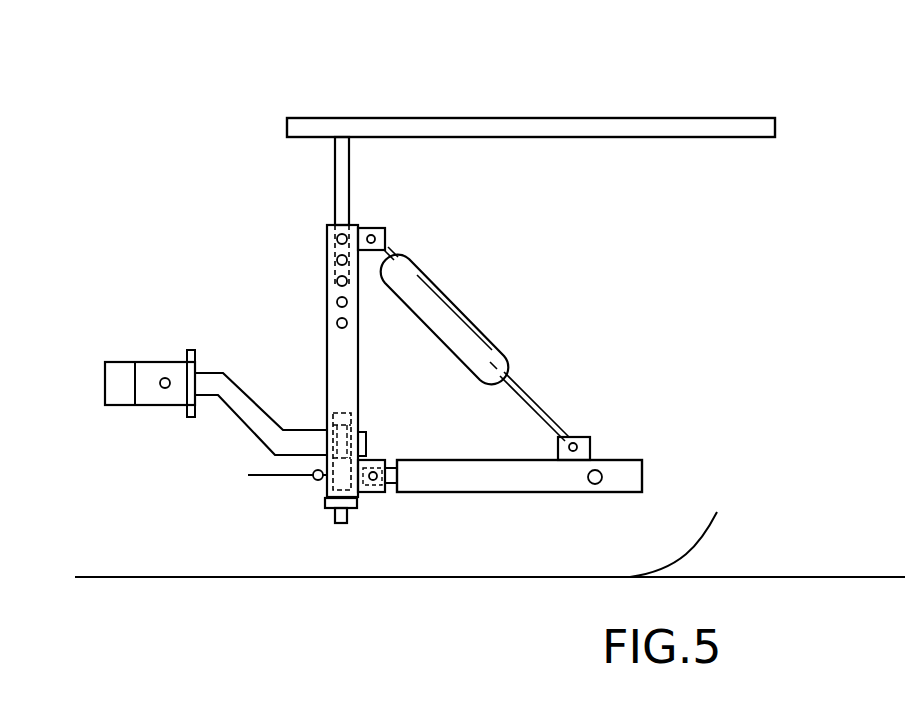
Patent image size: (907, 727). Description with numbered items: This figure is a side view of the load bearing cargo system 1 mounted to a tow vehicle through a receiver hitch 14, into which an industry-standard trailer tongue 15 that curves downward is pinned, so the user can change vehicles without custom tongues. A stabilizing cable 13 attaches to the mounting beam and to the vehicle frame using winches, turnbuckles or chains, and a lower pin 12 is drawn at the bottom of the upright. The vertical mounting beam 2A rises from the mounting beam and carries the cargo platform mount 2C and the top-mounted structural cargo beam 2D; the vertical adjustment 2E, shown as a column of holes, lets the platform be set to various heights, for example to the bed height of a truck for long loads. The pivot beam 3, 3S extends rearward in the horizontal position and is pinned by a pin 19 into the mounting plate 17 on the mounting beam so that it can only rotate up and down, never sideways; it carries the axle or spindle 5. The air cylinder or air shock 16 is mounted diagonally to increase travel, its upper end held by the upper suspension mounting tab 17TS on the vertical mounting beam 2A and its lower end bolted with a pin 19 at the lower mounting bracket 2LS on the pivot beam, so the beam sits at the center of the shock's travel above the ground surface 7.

The towing/lifting device 1 is at (809, 93).
The structural cargo beam 2D is at (358, 118).
The cargo platform mount 2C is at (333, 178).
The vertical adjustment 2E is at (337, 240).
The vertical mounting beam 2A is at (313, 361).
The lower strut bracket 2LS is at (589, 437).
The pivot beam 3 is at (513, 496).
The horizontal beam section 3S is at (413, 477).
The axle or spindle 5 is at (602, 478).
The ground surface 7 is at (703, 538).
The locking pin 12 is at (337, 522).
The stabilizing cable 13 is at (288, 476).
The receiver hitch 14 is at (160, 400).
The trailer tongue 15 is at (250, 430).
The air cylinder or air shock 16 is at (437, 312).
The mounting plate 17 is at (384, 460).
The upper suspension mounting tab 17TS is at (383, 224).
The pin or bolt 19 is at (367, 225).